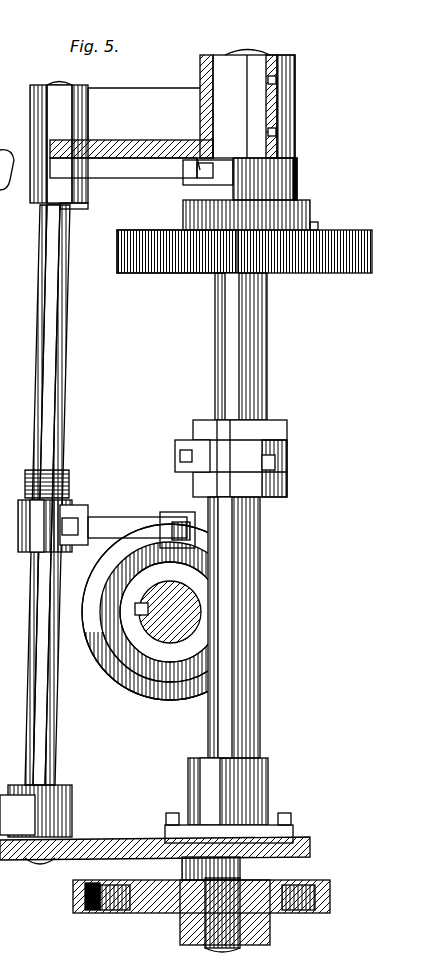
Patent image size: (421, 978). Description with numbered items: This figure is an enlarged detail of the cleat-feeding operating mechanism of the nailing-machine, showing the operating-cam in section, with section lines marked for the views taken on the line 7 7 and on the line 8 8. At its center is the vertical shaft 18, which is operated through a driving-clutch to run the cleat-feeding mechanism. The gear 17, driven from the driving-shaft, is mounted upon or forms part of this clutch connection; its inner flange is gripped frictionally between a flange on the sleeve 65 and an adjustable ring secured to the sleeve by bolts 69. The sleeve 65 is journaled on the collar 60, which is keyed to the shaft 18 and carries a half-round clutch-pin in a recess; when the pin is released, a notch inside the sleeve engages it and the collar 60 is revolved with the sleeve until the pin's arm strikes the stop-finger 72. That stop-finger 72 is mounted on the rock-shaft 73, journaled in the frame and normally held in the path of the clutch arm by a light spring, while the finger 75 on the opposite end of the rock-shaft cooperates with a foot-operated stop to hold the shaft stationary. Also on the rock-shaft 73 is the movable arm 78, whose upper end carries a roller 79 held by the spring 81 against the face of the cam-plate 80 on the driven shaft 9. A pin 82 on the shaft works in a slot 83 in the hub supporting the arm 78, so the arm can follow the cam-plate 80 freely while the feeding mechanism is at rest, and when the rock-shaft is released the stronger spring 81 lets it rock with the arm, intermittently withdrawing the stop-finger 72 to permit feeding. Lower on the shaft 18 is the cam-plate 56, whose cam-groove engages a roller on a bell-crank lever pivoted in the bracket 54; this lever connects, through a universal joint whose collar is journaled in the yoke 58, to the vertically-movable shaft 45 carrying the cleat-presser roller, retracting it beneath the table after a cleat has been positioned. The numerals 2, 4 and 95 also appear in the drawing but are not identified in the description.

The frame 2 is at (5, 160).
The bracket 4 is at (7, 170).
The section line 7 7 is at (85, 800).
The section line 8 8 is at (325, 145).
The driven shaft 9 is at (168, 638).
The gear 17 is at (320, 273).
The shaft 18 is at (270, 375).
The vertically-movable shaft 45 is at (22, 212).
The bracket 54 is at (10, 340).
The cam-plate 56 is at (108, 905).
The yoke 58 is at (12, 282).
The collar 60 is at (312, 178).
The sleeve 65 is at (212, 212).
The bolts 69 is at (318, 222).
The stop-finger 72 is at (103, 170).
The rock-shaft 73 is at (62, 412).
The finger 75 is at (10, 436).
The movable arm 78 is at (100, 528).
The roller 79 is at (180, 522).
The cam-plate 80 is at (92, 614).
The spring 81 is at (70, 492).
The pin 82 is at (161, 612).
The slot 83 is at (44, 536).
The spring 95 is at (20, 642).